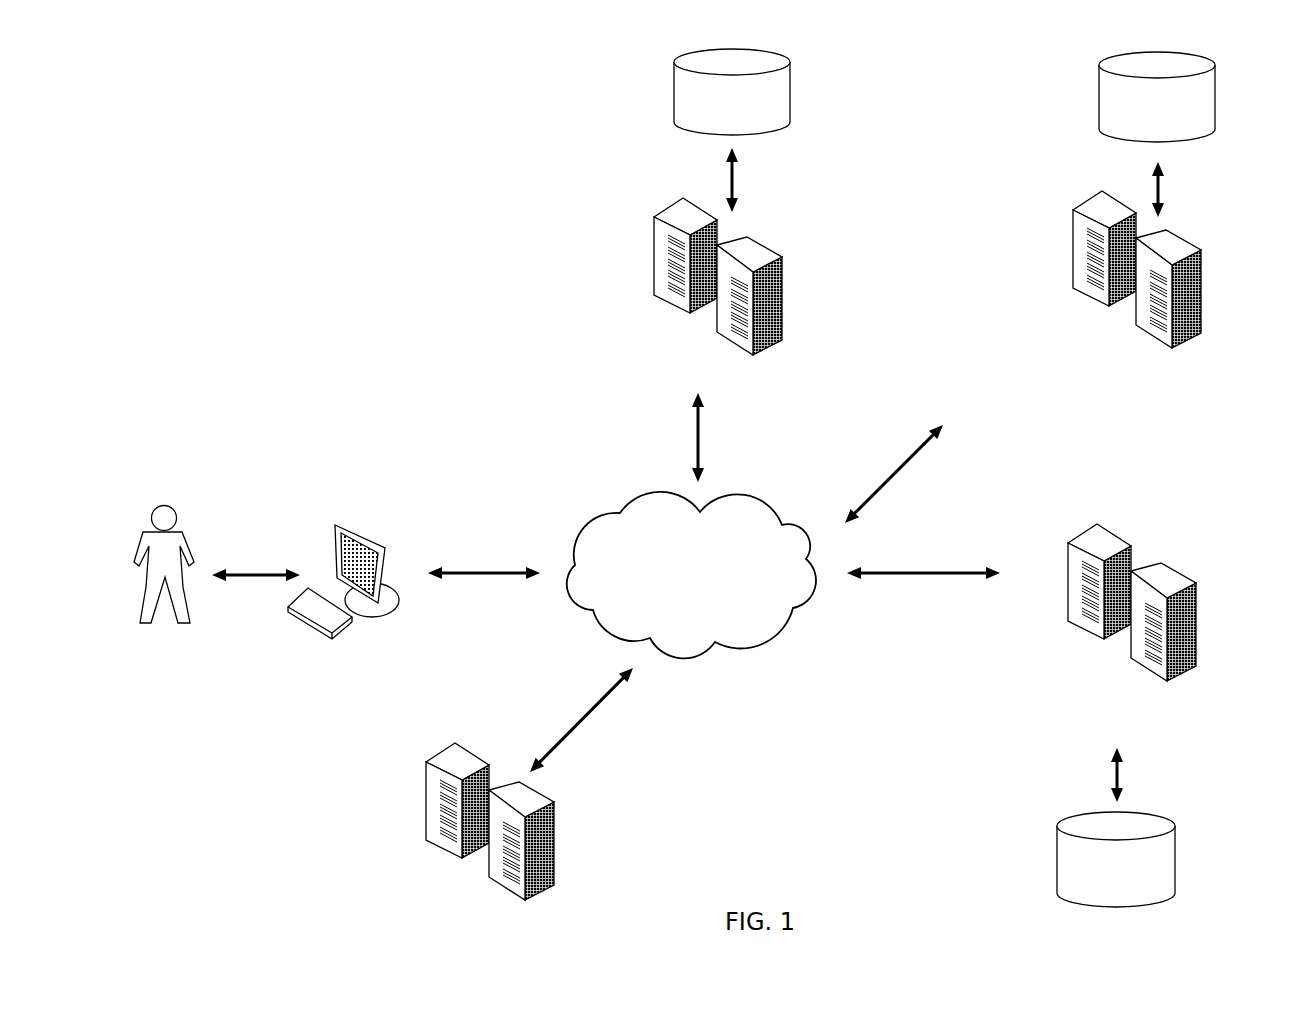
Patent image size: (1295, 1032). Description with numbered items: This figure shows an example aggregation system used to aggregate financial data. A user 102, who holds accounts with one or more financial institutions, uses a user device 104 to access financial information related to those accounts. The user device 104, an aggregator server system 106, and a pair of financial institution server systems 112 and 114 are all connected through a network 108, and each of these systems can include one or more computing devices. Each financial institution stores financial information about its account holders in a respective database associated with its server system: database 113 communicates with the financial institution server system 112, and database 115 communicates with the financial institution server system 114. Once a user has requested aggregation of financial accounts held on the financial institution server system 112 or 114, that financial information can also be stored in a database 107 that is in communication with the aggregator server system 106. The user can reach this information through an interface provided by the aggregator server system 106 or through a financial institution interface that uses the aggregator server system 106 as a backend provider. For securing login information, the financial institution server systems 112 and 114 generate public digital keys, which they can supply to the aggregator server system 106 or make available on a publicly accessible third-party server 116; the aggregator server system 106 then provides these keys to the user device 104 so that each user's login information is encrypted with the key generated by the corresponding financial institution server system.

The user 102 is at (181, 507).
The user device 104 is at (359, 507).
The aggregator server system 106 is at (757, 218).
The database 107 is at (785, 52).
The network 108 is at (755, 631).
The financial institution server system 112 is at (1173, 557).
The database 113 is at (1165, 815).
The financial institution server system 114 is at (1177, 213).
The database 115 is at (1207, 55).
The third-party server 116 is at (552, 803).